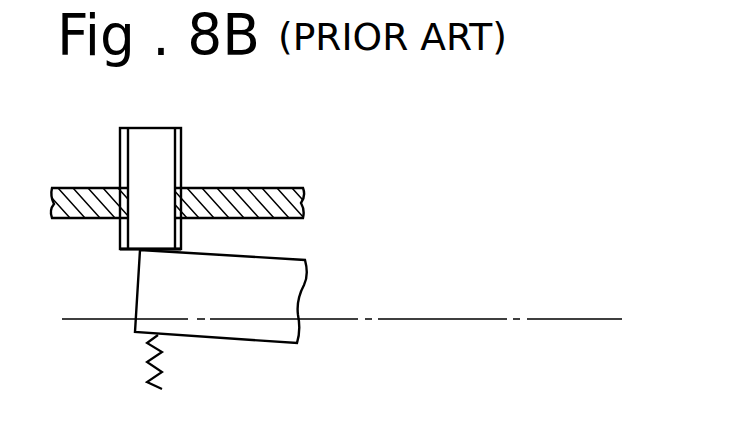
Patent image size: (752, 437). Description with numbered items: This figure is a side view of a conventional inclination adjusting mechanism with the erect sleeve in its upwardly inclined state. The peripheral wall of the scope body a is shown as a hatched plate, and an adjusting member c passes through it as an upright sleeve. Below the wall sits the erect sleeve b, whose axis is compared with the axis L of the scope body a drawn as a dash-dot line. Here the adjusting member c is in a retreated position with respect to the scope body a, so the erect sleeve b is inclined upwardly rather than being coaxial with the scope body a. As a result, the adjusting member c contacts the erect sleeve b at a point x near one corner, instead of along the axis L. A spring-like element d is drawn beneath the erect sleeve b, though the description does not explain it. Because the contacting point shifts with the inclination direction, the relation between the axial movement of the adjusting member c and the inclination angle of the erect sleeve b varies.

The peripheral wall of the scope body a is at (252, 193).
The erect sleeve b is at (245, 342).
The adjusting member c is at (135, 151).
The spring d is at (147, 365).
The contact point x is at (139, 265).
The axis of the scope body L is at (447, 322).